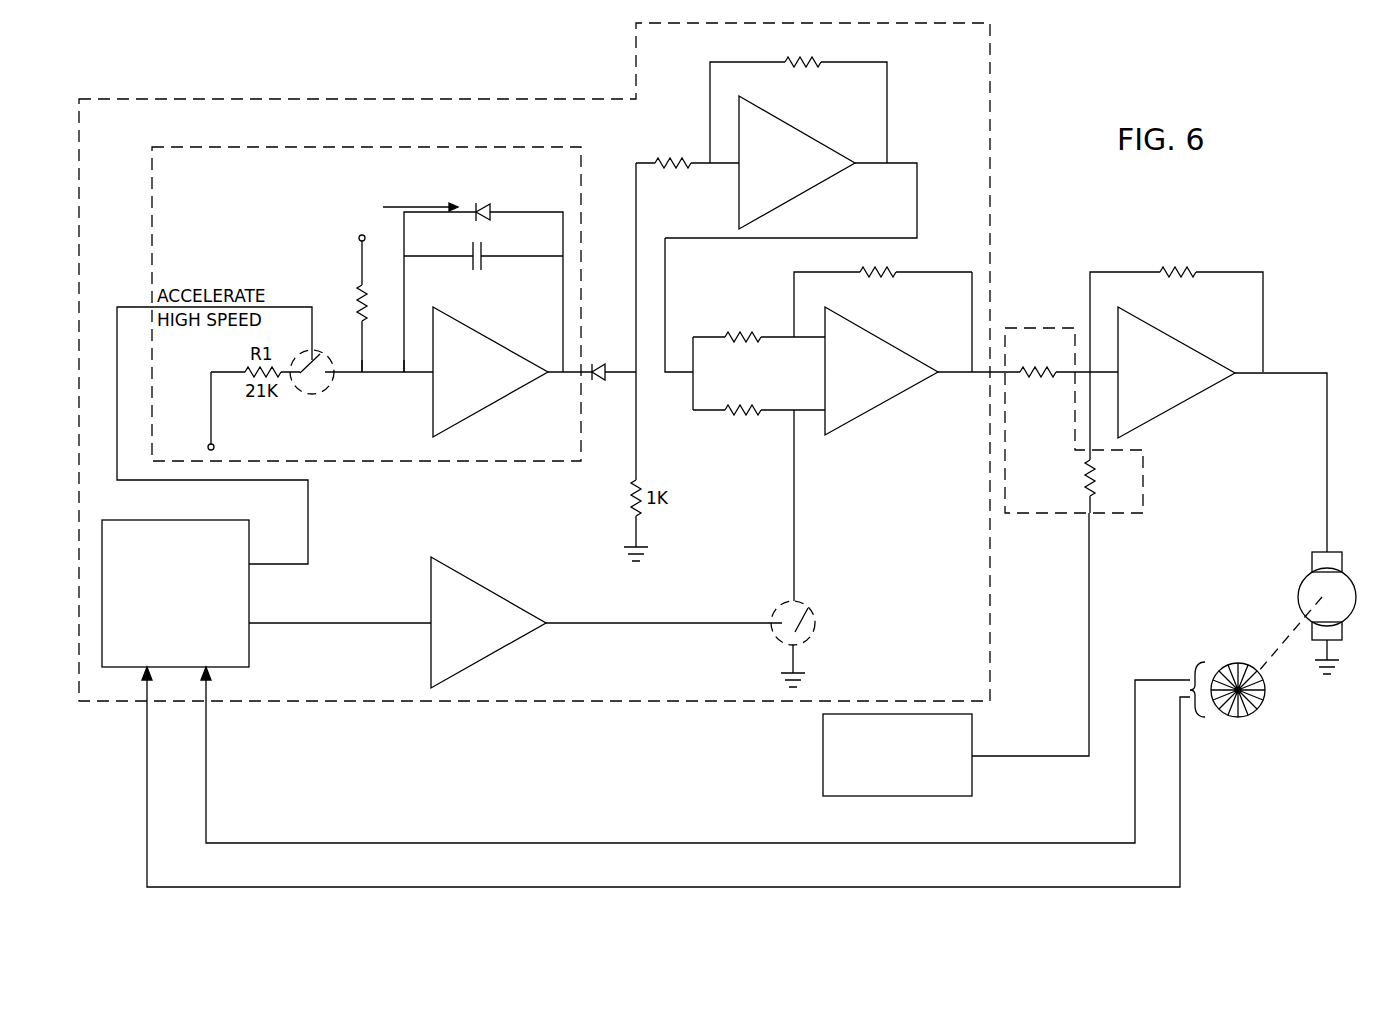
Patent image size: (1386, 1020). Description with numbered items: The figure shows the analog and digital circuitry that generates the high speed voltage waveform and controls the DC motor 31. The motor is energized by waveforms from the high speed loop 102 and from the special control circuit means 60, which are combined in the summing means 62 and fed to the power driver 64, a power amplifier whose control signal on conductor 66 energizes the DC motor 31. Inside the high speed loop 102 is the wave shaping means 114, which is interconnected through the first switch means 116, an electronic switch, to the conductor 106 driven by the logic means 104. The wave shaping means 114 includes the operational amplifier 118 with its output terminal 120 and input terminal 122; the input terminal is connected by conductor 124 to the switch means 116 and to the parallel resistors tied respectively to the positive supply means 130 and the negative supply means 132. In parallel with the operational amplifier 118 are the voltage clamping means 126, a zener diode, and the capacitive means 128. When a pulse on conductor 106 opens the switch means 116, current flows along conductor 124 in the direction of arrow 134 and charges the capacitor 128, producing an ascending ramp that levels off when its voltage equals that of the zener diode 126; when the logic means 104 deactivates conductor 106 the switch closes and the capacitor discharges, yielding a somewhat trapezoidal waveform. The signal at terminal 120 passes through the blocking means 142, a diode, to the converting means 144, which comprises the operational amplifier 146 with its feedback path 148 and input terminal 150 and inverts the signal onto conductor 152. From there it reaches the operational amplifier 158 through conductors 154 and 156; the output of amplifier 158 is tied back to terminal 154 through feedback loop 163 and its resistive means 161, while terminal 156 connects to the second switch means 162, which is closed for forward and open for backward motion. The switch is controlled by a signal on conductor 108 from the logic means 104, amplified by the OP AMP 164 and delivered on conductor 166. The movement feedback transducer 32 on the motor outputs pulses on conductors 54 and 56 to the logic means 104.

The high speed loop 102 is at (990, 222).
The wave shaping means 114 is at (468, 147).
The logic means 104 is at (249, 652).
The conductor 106 is at (308, 520).
The conductor 108 is at (355, 623).
The first switch means 116 is at (325, 387).
The operational amplifier 118 is at (485, 405).
The output terminal 120 is at (563, 376).
The input terminal 122 is at (428, 372).
The conductor 124 is at (400, 372).
The voltage clamping means 126 is at (482, 204).
The capacitive means 128 is at (484, 251).
The positive supply means 130 is at (358, 242).
The negative supply means 132 is at (207, 446).
The arrow 134 is at (419, 196).
The blocking means 142 is at (598, 365).
The converting means 144 is at (917, 203).
The operational amplifier 146 is at (805, 192).
The feedback path 148 is at (887, 105).
The input terminal 150 is at (708, 167).
The conductor 152 is at (748, 243).
The conductor 154 is at (712, 338).
The conductor 156 is at (712, 411).
The operational amplifier 158 is at (895, 397).
The resistive means 161 is at (888, 277).
The second switch means 162 is at (815, 623).
The feedback loop 163 is at (932, 272).
The OP AMP 164 is at (490, 653).
The conductor 166 is at (637, 623).
The summing means 62 is at (1022, 328).
The power driver 64 is at (1198, 396).
The conductor 66 is at (1328, 403).
The special control circuit means 60 is at (972, 785).
The conductor 54 is at (1134, 803).
The conductor 56 is at (1181, 803).
The DC motor 31 is at (1350, 610).
The movement feedback transducer 32 is at (1262, 702).